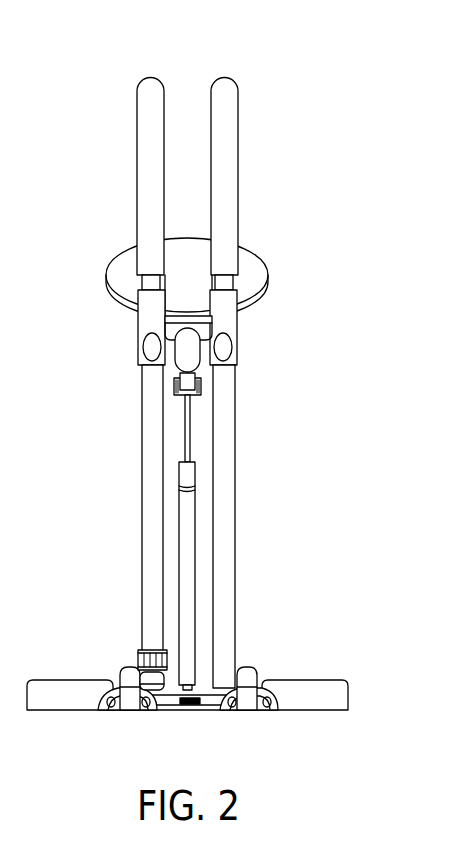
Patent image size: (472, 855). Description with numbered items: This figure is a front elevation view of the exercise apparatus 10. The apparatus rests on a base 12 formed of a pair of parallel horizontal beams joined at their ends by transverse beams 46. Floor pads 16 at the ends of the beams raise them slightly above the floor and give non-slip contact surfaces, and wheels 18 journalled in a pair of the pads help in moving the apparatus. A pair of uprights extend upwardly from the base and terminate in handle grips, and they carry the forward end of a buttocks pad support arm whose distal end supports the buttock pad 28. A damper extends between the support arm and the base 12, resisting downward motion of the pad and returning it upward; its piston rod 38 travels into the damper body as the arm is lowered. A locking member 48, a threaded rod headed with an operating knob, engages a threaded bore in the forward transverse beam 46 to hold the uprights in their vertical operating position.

The exercise apparatus 10 is at (340, 68).
The base 12 is at (193, 678).
The floor pads 16 is at (110, 708).
The wheels 18 is at (129, 702).
The buttock pad 28 is at (257, 268).
The piston rod 38 is at (187, 432).
The transverse beams 46 is at (200, 698).
The locking member 48 is at (150, 662).